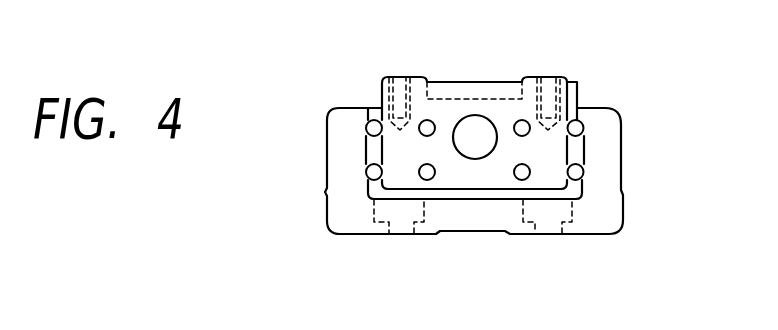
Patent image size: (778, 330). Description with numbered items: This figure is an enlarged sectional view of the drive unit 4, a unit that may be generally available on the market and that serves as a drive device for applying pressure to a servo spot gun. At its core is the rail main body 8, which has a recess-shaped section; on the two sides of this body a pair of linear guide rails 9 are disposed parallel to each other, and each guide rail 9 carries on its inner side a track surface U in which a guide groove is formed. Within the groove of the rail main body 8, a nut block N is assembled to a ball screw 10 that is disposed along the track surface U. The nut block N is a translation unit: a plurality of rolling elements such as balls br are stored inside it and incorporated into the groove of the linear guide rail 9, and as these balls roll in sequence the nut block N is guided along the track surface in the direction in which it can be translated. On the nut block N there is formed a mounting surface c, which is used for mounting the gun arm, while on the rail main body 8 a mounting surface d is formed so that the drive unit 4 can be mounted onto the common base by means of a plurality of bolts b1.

The drive unit 4 is at (586, 242).
The linear guide rail 9 is at (328, 130).
The track surface U is at (368, 153).
The rail main body 8 is at (496, 229).
The mounting surface c is at (508, 82).
The nut block N is at (453, 92).
The ball br is at (524, 121).
The ball screw 10 is at (468, 150).
The mounting surface d is at (382, 234).
The bolt b1 is at (547, 234).